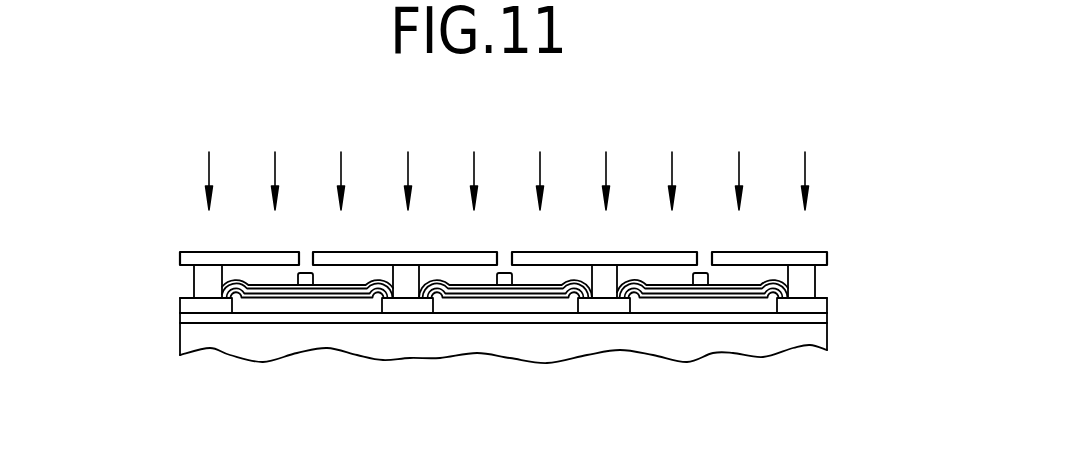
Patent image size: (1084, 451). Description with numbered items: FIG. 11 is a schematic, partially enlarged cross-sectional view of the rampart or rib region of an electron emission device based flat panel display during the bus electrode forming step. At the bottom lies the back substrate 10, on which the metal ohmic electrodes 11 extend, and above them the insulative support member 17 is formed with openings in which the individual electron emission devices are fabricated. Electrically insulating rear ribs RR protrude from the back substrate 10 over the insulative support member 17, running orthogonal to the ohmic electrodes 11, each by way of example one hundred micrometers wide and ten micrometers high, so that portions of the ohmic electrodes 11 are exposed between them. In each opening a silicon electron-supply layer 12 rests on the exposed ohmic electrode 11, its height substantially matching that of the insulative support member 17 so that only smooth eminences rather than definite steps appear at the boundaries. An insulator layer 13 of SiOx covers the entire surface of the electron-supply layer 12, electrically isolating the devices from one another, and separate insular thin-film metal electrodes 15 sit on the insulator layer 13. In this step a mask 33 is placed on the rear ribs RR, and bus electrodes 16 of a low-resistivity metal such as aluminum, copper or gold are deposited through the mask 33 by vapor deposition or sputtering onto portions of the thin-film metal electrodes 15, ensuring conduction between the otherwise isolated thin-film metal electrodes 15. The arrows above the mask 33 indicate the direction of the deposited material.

The back substrate 10 is at (185, 337).
The ohmic electrode 11 is at (827, 318).
The electron-supply layer 12 is at (703, 307).
The insulator layer 13 is at (536, 298).
The thin-film metal electrode 15 is at (468, 288).
The bus electrode 16 is at (700, 272).
The insulative support member 17 is at (827, 307).
The mask 33 is at (822, 253).
The rear rib RR is at (195, 287).